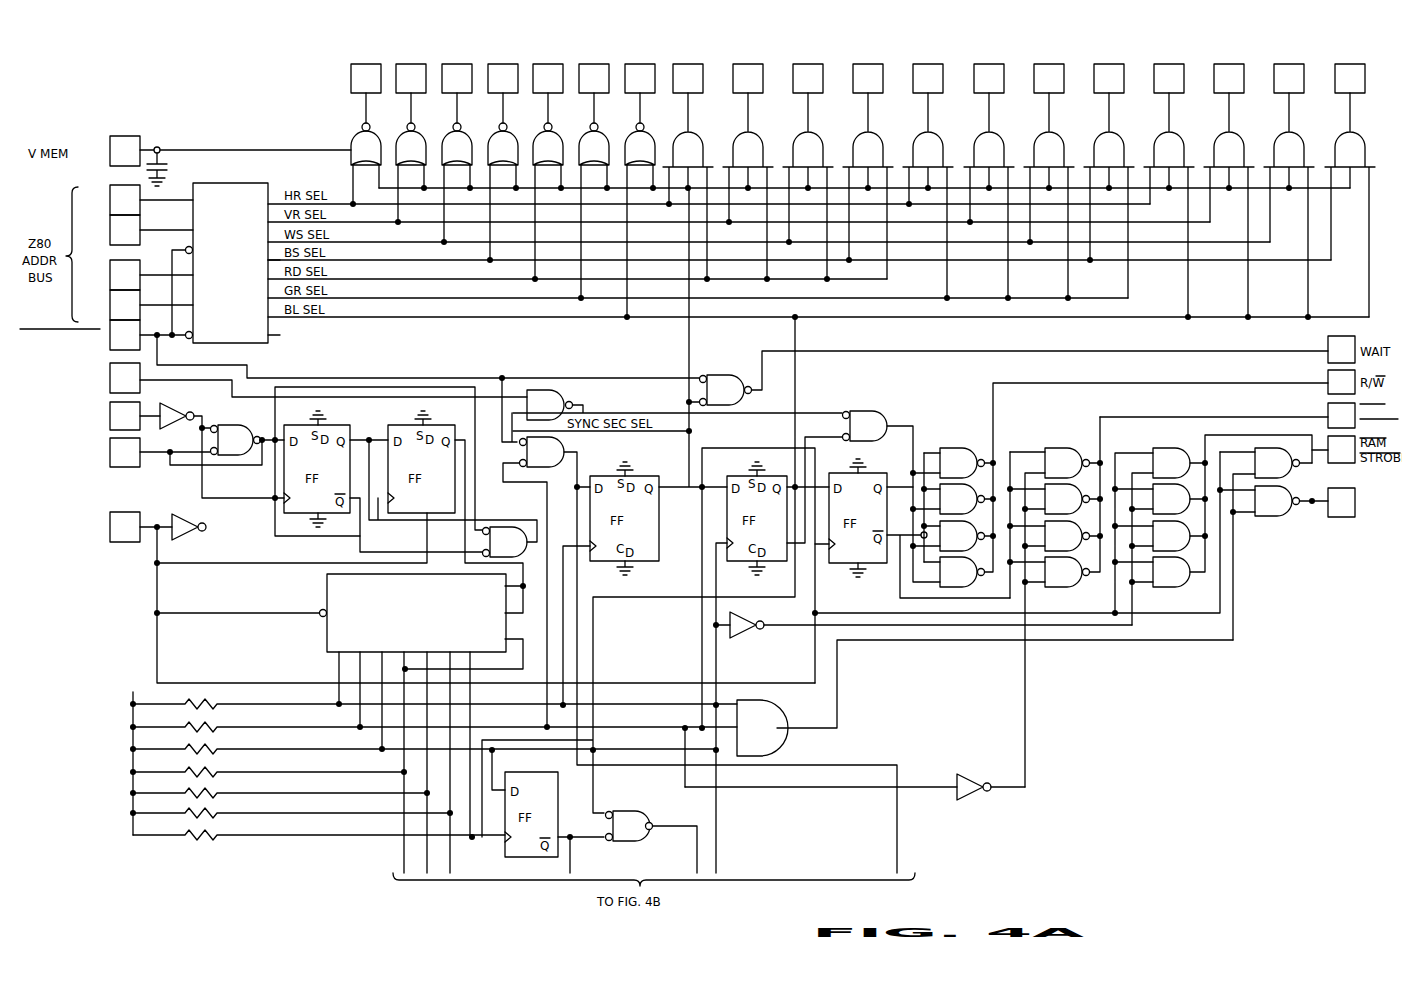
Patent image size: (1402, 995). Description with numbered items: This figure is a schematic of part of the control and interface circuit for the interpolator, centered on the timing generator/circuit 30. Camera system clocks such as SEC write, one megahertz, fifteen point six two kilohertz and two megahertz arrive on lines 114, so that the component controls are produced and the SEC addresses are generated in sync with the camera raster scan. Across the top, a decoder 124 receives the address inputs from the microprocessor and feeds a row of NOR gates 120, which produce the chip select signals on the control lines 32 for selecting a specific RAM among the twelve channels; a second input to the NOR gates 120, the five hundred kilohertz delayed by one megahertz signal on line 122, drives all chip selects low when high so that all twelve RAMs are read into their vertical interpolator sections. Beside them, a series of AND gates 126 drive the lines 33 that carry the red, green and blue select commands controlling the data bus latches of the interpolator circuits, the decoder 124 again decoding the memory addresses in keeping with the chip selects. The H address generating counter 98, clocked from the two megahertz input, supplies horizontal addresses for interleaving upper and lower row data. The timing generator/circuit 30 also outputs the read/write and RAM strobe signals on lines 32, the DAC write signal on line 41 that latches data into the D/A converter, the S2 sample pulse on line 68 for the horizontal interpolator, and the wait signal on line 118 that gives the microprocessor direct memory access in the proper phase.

The timing generator/circuit 30 is at (882, 592).
The control lines 32 is at (660, 34).
The select command lines 33 is at (1380, 34).
The DAC write line 41 is at (1297, 417).
The sample-2 (S2) line 68 is at (1312, 503).
The H address generating counter 98 is at (325, 630).
The clock input lines 114 is at (12, 322).
The wait signal line 118 is at (1265, 352).
The NOR gates 120 is at (538, 133).
The 500 KHZ delayed by 1 MHZ line 122 is at (797, 388).
The decoder 124 is at (266, 190).
The AND gates 126 is at (1100, 143).